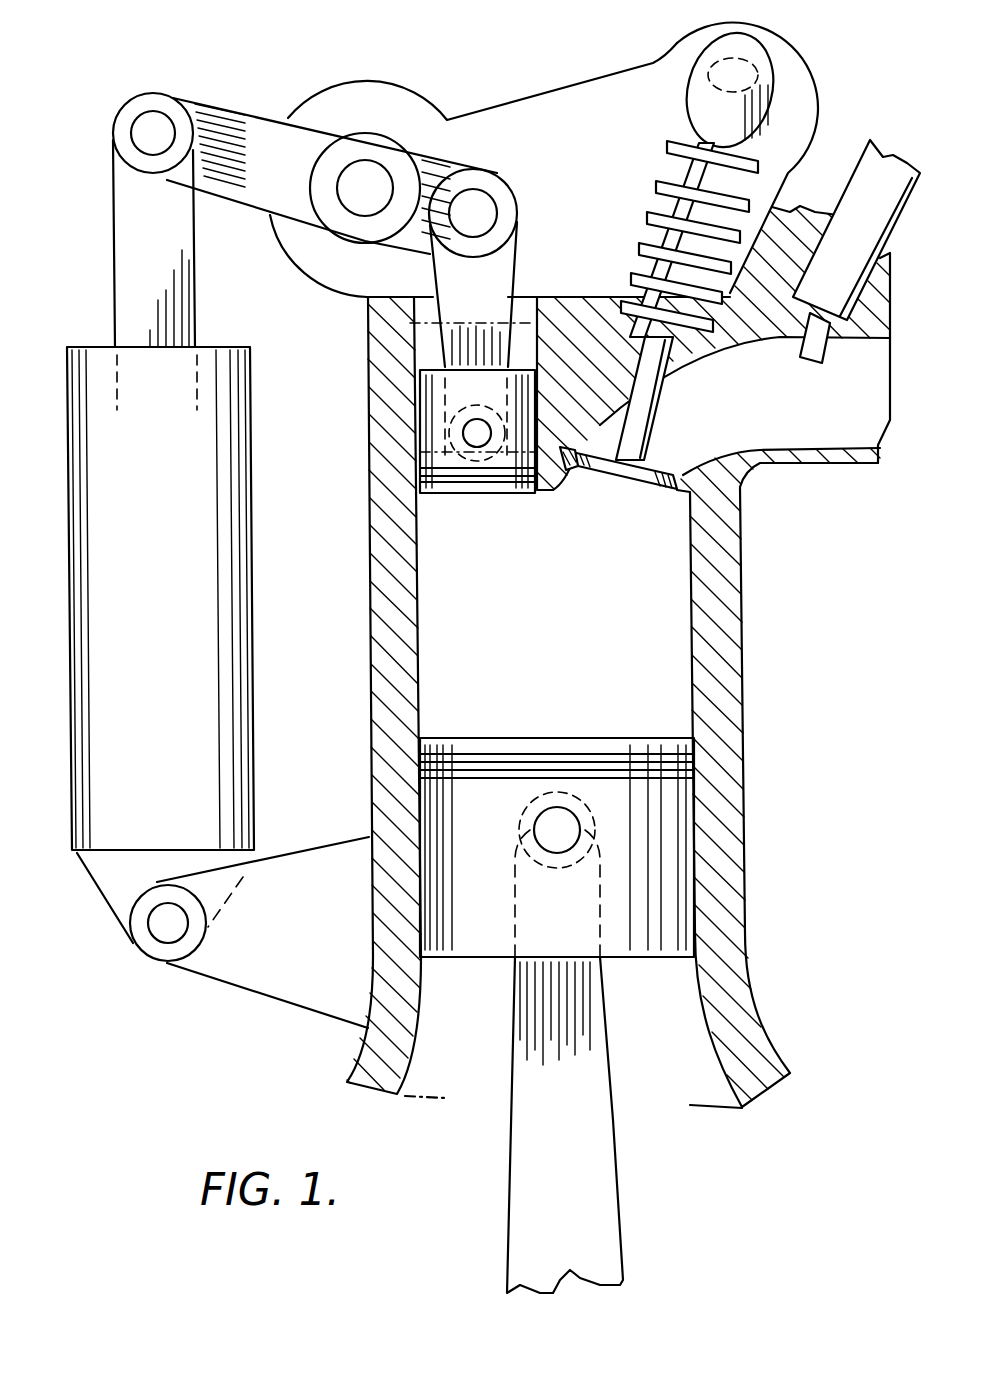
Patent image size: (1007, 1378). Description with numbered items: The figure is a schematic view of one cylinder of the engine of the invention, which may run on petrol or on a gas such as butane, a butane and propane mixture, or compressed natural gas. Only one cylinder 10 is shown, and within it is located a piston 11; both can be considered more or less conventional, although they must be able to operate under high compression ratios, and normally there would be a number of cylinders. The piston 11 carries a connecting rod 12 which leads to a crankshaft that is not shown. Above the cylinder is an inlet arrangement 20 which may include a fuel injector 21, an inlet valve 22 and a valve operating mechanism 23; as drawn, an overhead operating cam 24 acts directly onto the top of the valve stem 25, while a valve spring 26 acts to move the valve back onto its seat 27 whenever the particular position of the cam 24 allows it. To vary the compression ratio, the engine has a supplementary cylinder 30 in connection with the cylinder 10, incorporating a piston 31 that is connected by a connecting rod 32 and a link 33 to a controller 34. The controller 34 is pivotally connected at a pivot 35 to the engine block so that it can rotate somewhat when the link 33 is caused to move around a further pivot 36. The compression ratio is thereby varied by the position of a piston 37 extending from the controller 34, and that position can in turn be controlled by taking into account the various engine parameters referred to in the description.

The cylinder 10 is at (633, 692).
The piston 11 is at (628, 888).
The connecting rod 12 is at (580, 1210).
The inlet arrangement 20 is at (728, 422).
The fuel injector 21 is at (877, 195).
The inlet valve 22 is at (637, 482).
The valve operating mechanism 23 is at (652, 142).
The cam 24 is at (770, 107).
The valve stem 25 is at (655, 248).
The valve spring 26 is at (655, 185).
The valve seat 27 is at (585, 470).
The supplementary cylinder 30 is at (413, 397).
The piston 31 is at (453, 422).
The connecting rod 32 is at (463, 303).
The link 33 is at (237, 160).
The controller 34 is at (166, 709).
The pivot 35 is at (160, 925).
The pivot 36 is at (360, 180).
The piston 37 is at (145, 203).